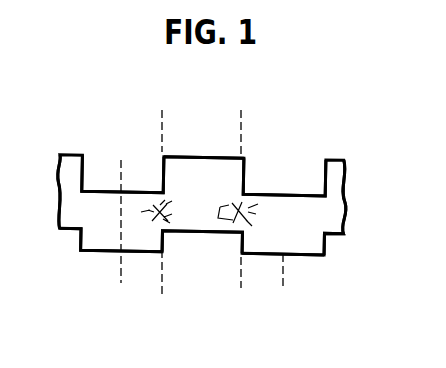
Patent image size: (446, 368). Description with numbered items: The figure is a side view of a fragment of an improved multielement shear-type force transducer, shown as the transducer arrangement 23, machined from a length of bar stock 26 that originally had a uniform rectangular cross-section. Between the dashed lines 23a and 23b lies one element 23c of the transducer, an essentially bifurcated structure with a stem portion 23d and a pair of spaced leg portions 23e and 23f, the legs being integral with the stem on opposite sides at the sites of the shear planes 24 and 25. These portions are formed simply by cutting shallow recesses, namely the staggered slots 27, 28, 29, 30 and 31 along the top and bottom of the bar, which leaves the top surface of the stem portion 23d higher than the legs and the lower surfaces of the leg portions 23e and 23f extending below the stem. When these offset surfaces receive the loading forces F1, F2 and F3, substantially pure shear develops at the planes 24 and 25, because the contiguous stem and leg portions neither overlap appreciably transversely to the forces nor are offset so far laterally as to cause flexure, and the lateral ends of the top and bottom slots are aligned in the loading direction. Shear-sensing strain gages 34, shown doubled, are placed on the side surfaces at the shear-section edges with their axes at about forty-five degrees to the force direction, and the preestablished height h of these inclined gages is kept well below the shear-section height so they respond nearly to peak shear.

The transducer arrangement 23 is at (82, 118).
The dashed line 23a is at (120, 282).
The dashed line 23b is at (285, 286).
The element 23c is at (312, 86).
The stem portion 23d is at (193, 167).
The leg portion 23e is at (172, 253).
The leg portion 23f is at (295, 254).
The plane 24 is at (162, 130).
The plane 25 is at (240, 289).
The bar stock 26 is at (60, 205).
The slot 27 is at (107, 183).
The slot 28 is at (297, 178).
The slot 29 is at (74, 236).
The slot 30 is at (202, 236).
The slot 31 is at (337, 243).
The shear-sensing strain gage 34 is at (250, 211).
The force F1 is at (202, 156).
The force F2 is at (140, 254).
The force F3 is at (265, 257).
The height of inclined gage h is at (218, 214).